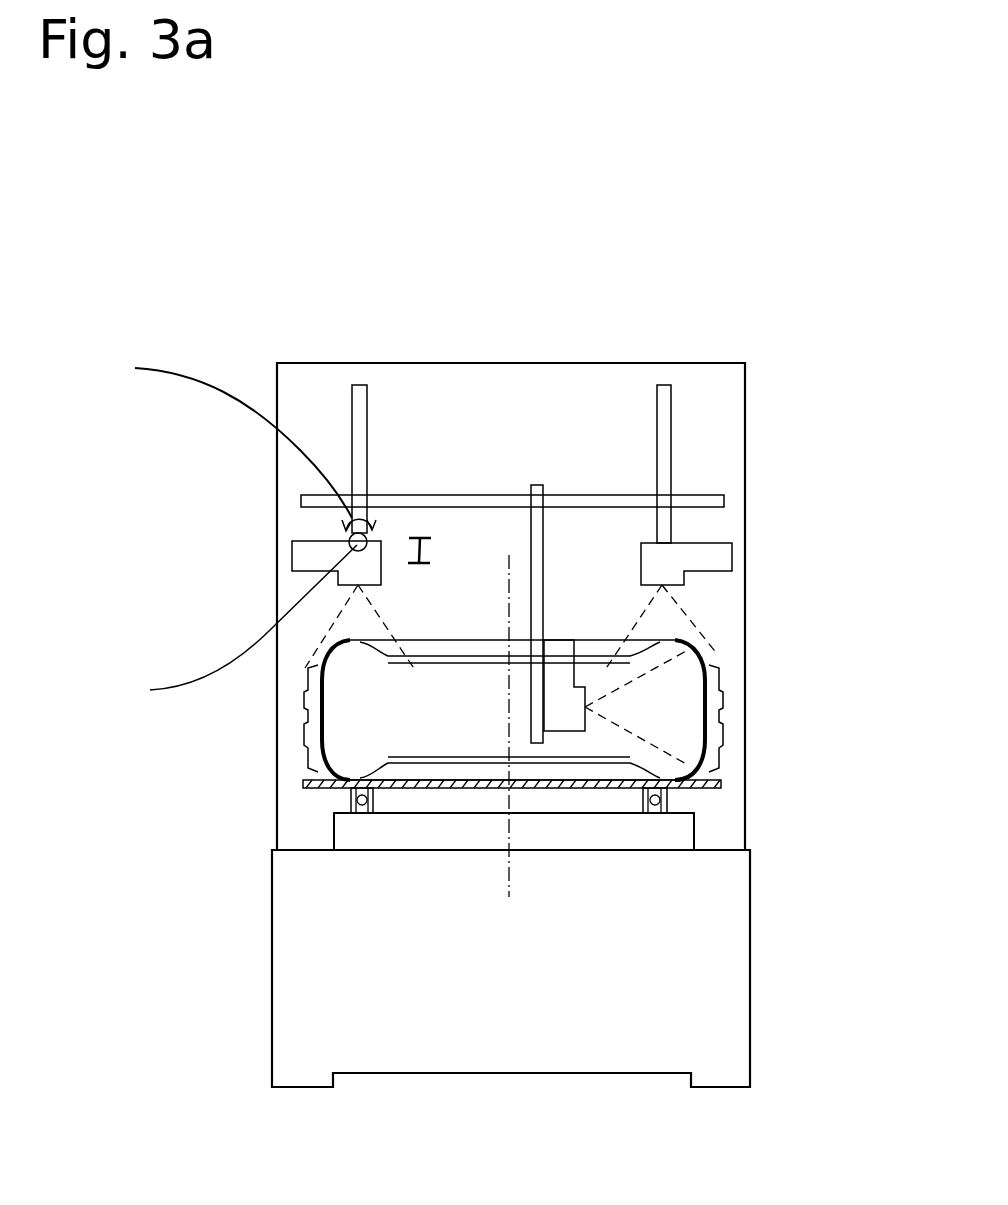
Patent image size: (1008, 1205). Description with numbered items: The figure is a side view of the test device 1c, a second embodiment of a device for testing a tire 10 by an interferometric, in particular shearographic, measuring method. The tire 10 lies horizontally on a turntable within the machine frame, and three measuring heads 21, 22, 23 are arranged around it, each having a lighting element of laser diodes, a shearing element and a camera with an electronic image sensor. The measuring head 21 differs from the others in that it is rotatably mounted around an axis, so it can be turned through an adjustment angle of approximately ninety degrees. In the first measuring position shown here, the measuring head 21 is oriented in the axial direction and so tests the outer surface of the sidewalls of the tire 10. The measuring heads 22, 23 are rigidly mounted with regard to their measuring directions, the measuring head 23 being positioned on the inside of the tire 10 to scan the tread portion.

The test device 1c is at (512, 252).
The tire 10 is at (318, 728).
The measuring head 21 is at (300, 556).
The measuring head 22 is at (720, 563).
The measuring head 23 is at (568, 697).